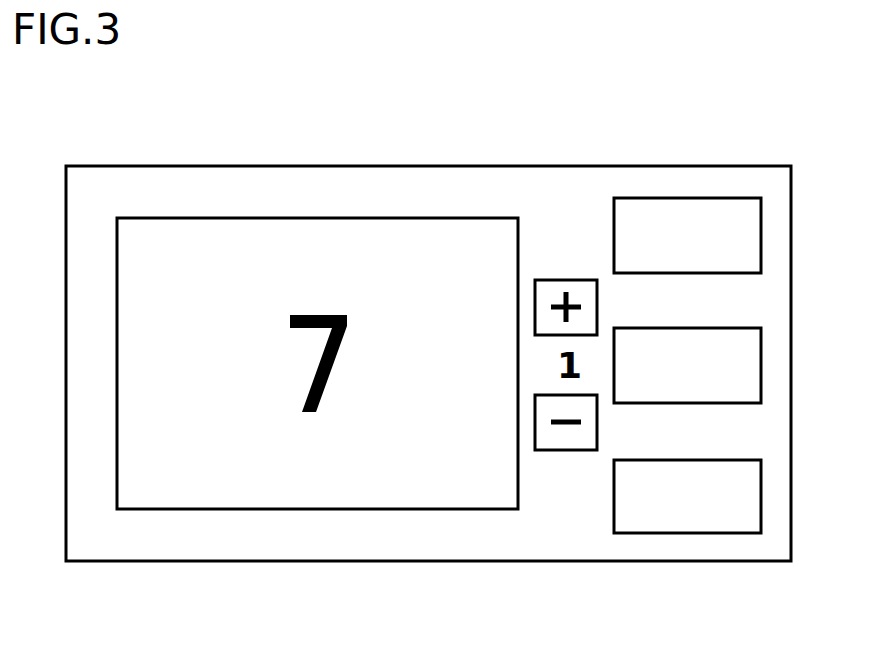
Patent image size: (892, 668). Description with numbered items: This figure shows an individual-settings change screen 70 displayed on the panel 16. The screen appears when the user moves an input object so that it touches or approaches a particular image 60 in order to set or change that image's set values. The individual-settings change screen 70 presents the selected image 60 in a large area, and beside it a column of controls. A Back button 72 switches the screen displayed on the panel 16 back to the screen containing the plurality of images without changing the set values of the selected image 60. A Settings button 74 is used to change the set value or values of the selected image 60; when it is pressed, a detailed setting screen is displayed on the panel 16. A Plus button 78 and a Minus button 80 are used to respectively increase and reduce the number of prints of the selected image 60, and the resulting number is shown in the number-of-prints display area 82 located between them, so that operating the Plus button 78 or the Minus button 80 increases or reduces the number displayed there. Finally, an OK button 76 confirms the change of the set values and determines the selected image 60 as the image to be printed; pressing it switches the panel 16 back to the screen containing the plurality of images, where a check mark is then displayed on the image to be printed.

The panel 16 is at (183, 166).
The image 60 is at (238, 510).
The individual-settings change screen 70 is at (425, 212).
The Back button 72 is at (762, 250).
The Settings button 74 is at (762, 380).
The OK button 76 is at (762, 510).
The Plus button 78 is at (565, 279).
The Minus button 80 is at (556, 452).
The number-of-prints display area 82 is at (591, 373).